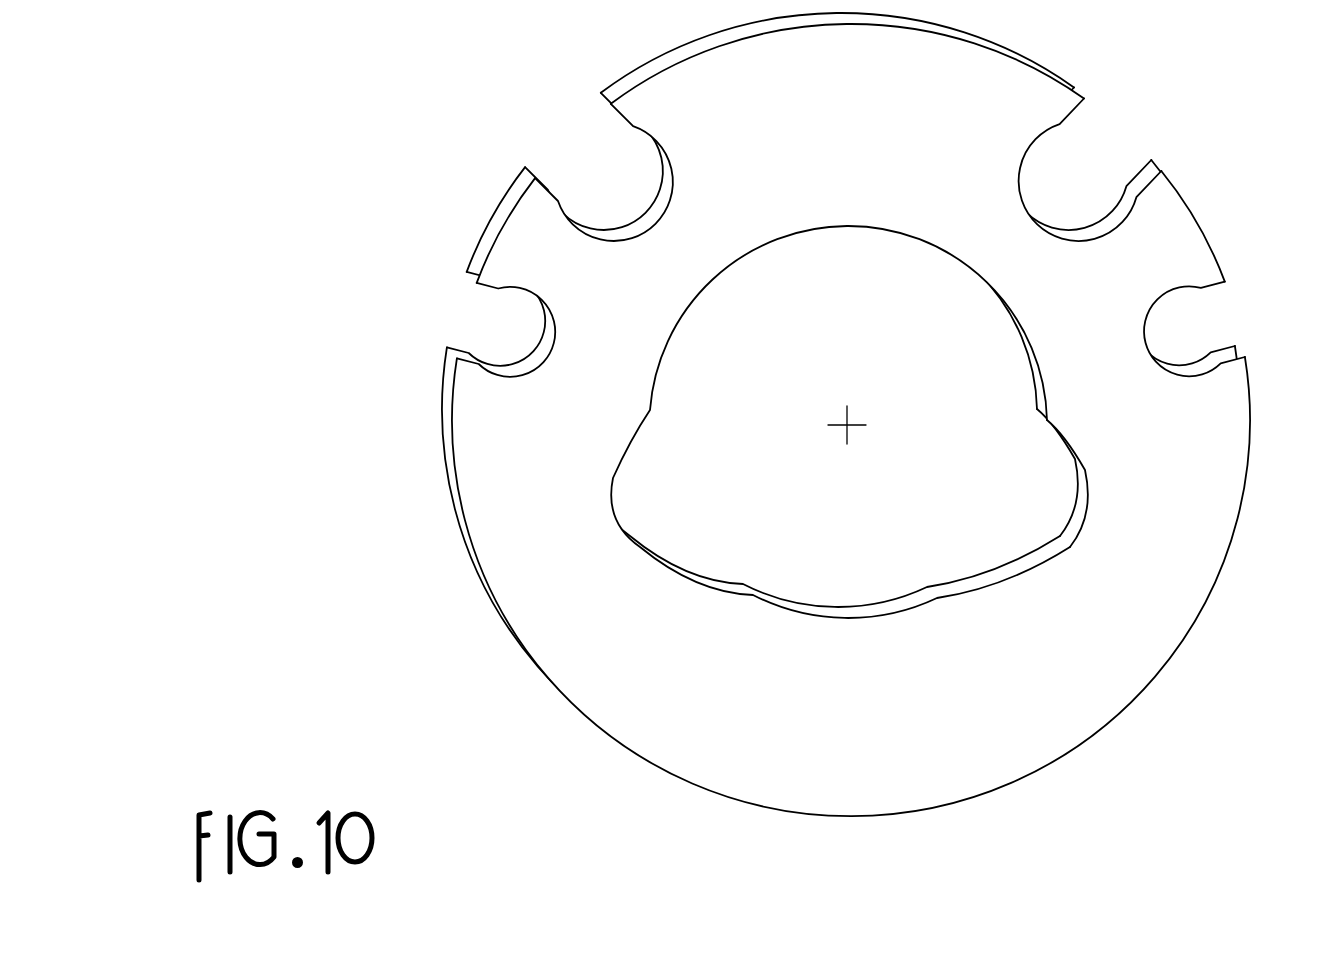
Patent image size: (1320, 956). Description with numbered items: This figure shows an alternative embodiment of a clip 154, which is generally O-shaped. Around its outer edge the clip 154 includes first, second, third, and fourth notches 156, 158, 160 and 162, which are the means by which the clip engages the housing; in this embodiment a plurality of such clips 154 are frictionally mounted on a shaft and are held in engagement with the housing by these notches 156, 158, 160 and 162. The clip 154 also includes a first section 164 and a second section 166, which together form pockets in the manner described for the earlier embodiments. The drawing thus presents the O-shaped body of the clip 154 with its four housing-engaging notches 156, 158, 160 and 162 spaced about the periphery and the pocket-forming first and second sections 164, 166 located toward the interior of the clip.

The clip 154 is at (1102, 755).
The first notch 156 is at (497, 330).
The second notch 158 is at (587, 157).
The third notch 160 is at (1085, 160).
The fourth notch 162 is at (1188, 321).
The first section 164 is at (617, 512).
The second section 166 is at (1068, 523).